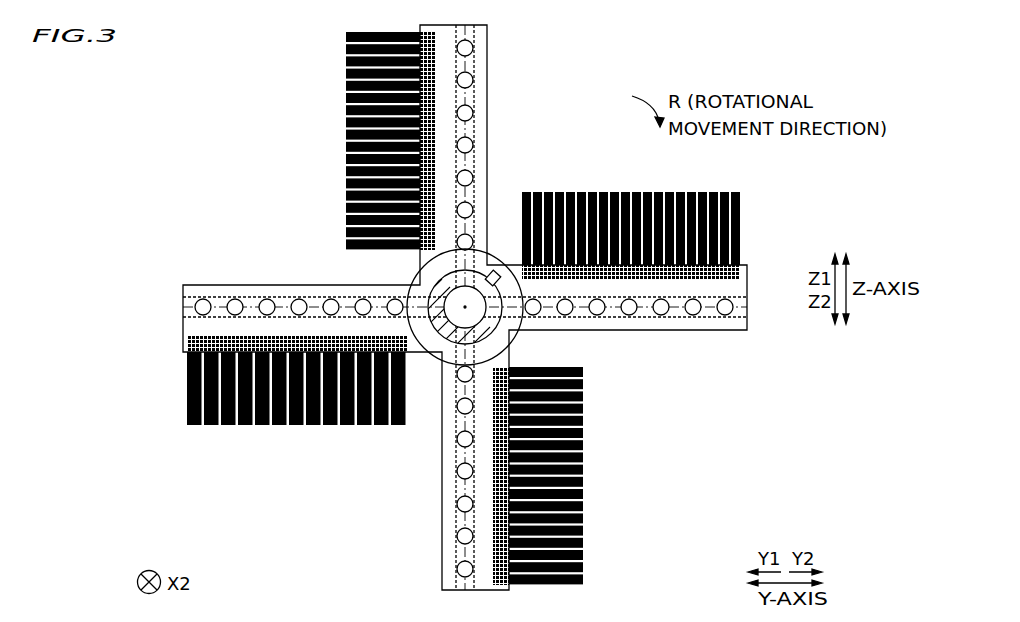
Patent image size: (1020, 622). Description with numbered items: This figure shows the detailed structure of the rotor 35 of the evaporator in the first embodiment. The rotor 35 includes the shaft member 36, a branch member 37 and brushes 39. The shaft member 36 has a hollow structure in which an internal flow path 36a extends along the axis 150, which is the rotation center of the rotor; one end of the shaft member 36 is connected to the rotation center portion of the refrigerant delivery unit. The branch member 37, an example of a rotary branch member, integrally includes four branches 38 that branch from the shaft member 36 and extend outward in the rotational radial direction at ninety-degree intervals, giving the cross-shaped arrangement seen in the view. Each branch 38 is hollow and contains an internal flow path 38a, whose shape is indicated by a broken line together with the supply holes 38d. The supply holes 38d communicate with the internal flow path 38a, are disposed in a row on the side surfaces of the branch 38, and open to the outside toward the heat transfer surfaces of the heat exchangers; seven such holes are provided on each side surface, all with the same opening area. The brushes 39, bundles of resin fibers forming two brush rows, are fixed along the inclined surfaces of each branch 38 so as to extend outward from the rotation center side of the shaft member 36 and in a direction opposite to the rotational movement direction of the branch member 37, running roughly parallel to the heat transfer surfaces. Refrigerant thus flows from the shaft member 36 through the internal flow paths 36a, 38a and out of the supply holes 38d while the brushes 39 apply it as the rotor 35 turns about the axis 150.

The rotor 35 is at (752, 47).
The shaft member 36 is at (495, 330).
The internal flow path 36a is at (449, 324).
The branch member 37 is at (757, 311).
The branch 38 is at (488, 33).
The internal flow path 38a is at (475, 216).
The supply hole 38d is at (472, 47).
The brush 39 is at (337, 248).
The axis 150 is at (465, 307).